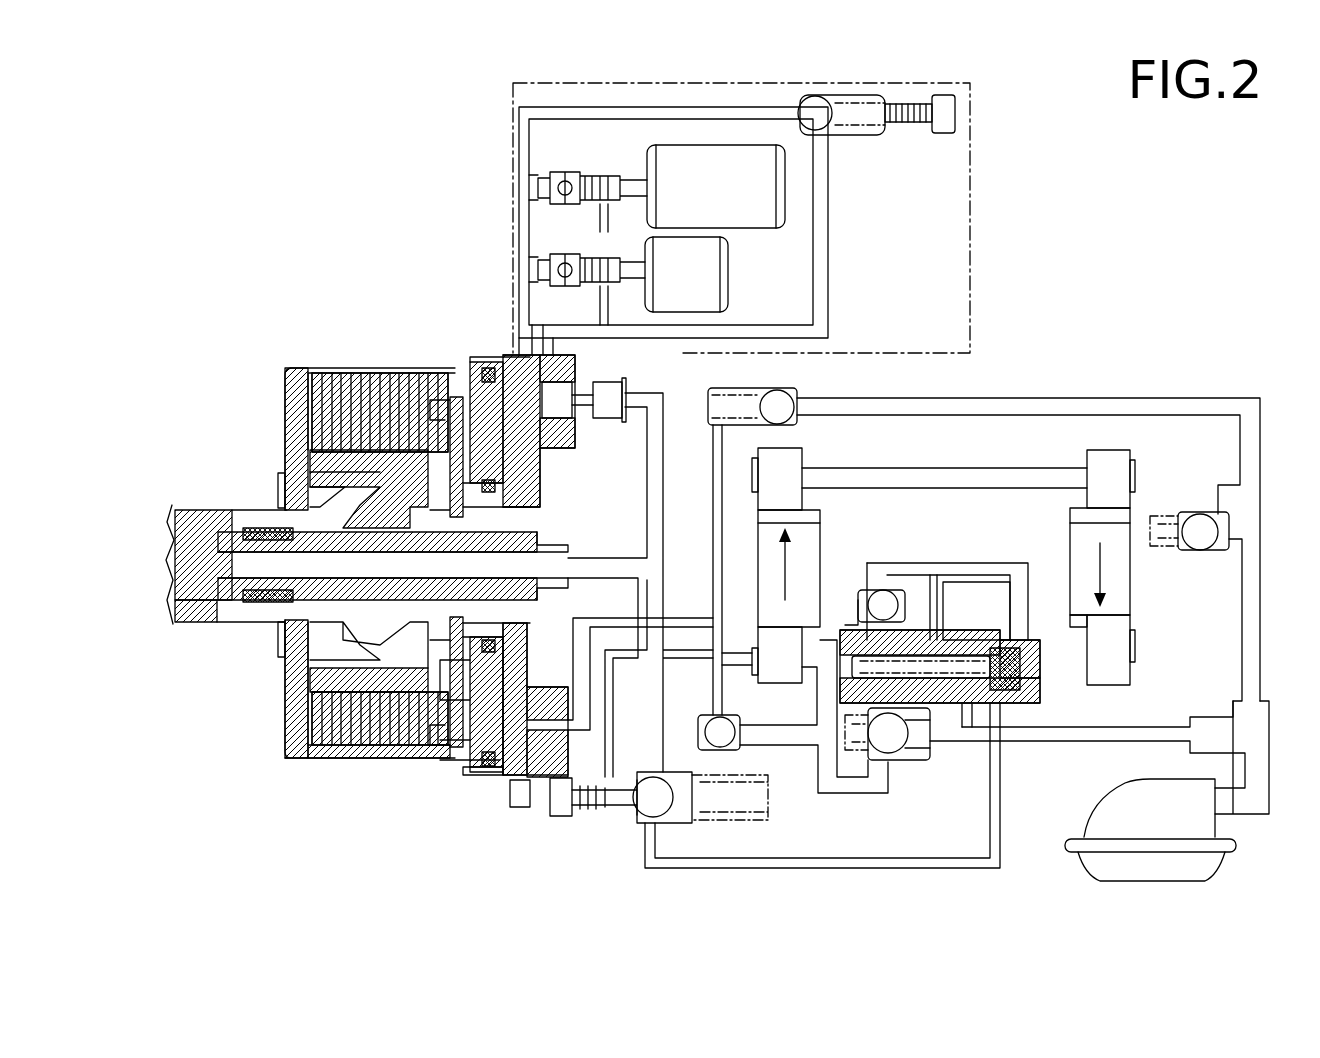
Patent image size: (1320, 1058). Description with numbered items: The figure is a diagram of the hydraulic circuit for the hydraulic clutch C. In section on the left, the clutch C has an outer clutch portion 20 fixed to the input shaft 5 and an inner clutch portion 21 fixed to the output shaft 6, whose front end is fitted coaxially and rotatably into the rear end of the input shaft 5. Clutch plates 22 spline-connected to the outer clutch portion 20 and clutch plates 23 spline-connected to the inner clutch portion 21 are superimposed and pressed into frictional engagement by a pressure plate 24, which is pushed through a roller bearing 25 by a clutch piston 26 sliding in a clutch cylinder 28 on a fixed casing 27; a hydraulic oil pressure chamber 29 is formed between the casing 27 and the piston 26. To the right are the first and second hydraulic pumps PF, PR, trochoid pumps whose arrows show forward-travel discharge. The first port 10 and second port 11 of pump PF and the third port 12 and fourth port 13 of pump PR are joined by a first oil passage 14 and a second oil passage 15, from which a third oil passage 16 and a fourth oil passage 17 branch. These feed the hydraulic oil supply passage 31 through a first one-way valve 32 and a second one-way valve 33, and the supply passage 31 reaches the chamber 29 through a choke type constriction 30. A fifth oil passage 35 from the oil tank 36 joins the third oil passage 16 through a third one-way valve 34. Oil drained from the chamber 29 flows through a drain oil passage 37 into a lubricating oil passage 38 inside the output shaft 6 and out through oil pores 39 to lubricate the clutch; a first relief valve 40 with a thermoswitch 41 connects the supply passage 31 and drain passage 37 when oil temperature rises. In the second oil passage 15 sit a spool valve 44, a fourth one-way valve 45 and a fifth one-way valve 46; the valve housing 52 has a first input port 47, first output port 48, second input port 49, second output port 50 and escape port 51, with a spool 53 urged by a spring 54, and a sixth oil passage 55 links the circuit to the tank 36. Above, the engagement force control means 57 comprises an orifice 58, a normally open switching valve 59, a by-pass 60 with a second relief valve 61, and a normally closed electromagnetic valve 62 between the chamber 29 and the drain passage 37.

The input shaft 5 is at (215, 520).
The output shaft 6 is at (540, 588).
The first port 10 is at (805, 478).
The second port 11 is at (802, 684).
The third port 12 is at (1085, 478).
The fourth port 13 is at (1085, 640).
The first oil passage 14 is at (958, 478).
The second oil passage 15 is at (850, 794).
The third oil passage 16 is at (1026, 408).
The fourth oil passage 17 is at (785, 740).
The outer clutch portion 20 is at (290, 370).
The inner clutch portion 21 is at (328, 462).
The clutch plates 22 is at (386, 375).
The clutch plates 23 is at (372, 740).
The pressure plate 24 is at (458, 760).
The roller bearing 25 is at (472, 382).
The clutch piston 26 is at (500, 370).
The casing 27 is at (525, 808).
The clutch cylinder 28 is at (490, 775).
The hydraulic oil pressure chamber 29 is at (512, 452).
The choke type constriction 30 is at (548, 712).
The hydraulic oil supply passage 31 is at (688, 624).
The first one-way valve 32 is at (790, 400).
The second one-way valve 33 is at (722, 728).
The third one-way valve 34 is at (1210, 525).
The fifth oil passage 35 is at (1245, 664).
The oil tank 36 is at (1102, 820).
The drain oil passage 37 is at (613, 228).
The lubricating oil passage 38 is at (268, 603).
The oil pores 39 is at (318, 540).
The first relief valve 40 is at (645, 805).
The thermoswitch 41 is at (538, 812).
The spool valve 44 is at (1036, 686).
The fourth one-way valve 45 is at (881, 597).
The fifth one-way valve 46 is at (890, 755).
The first input port 47 is at (895, 742).
The first output port 48 is at (932, 625).
The second input port 49 is at (1035, 642).
The second output port 50 is at (970, 728).
The escape port 51 is at (1003, 712).
The valve housing 52 is at (998, 640).
The spool 53 is at (965, 640).
The spring 54 is at (856, 642).
The sixth oil passage 55 is at (1125, 735).
The engagement force control means 57 is at (513, 175).
The orifice 58 is at (586, 373).
The switching valve 59 is at (733, 268).
The by-pass 60 is at (820, 254).
The second relief valve 61 is at (820, 125).
The electromagnetic valve 62 is at (634, 148).
The hydraulic clutch C is at (330, 364).
The first hydraulic pump PF is at (820, 541).
The second hydraulic pump PR is at (1133, 561).